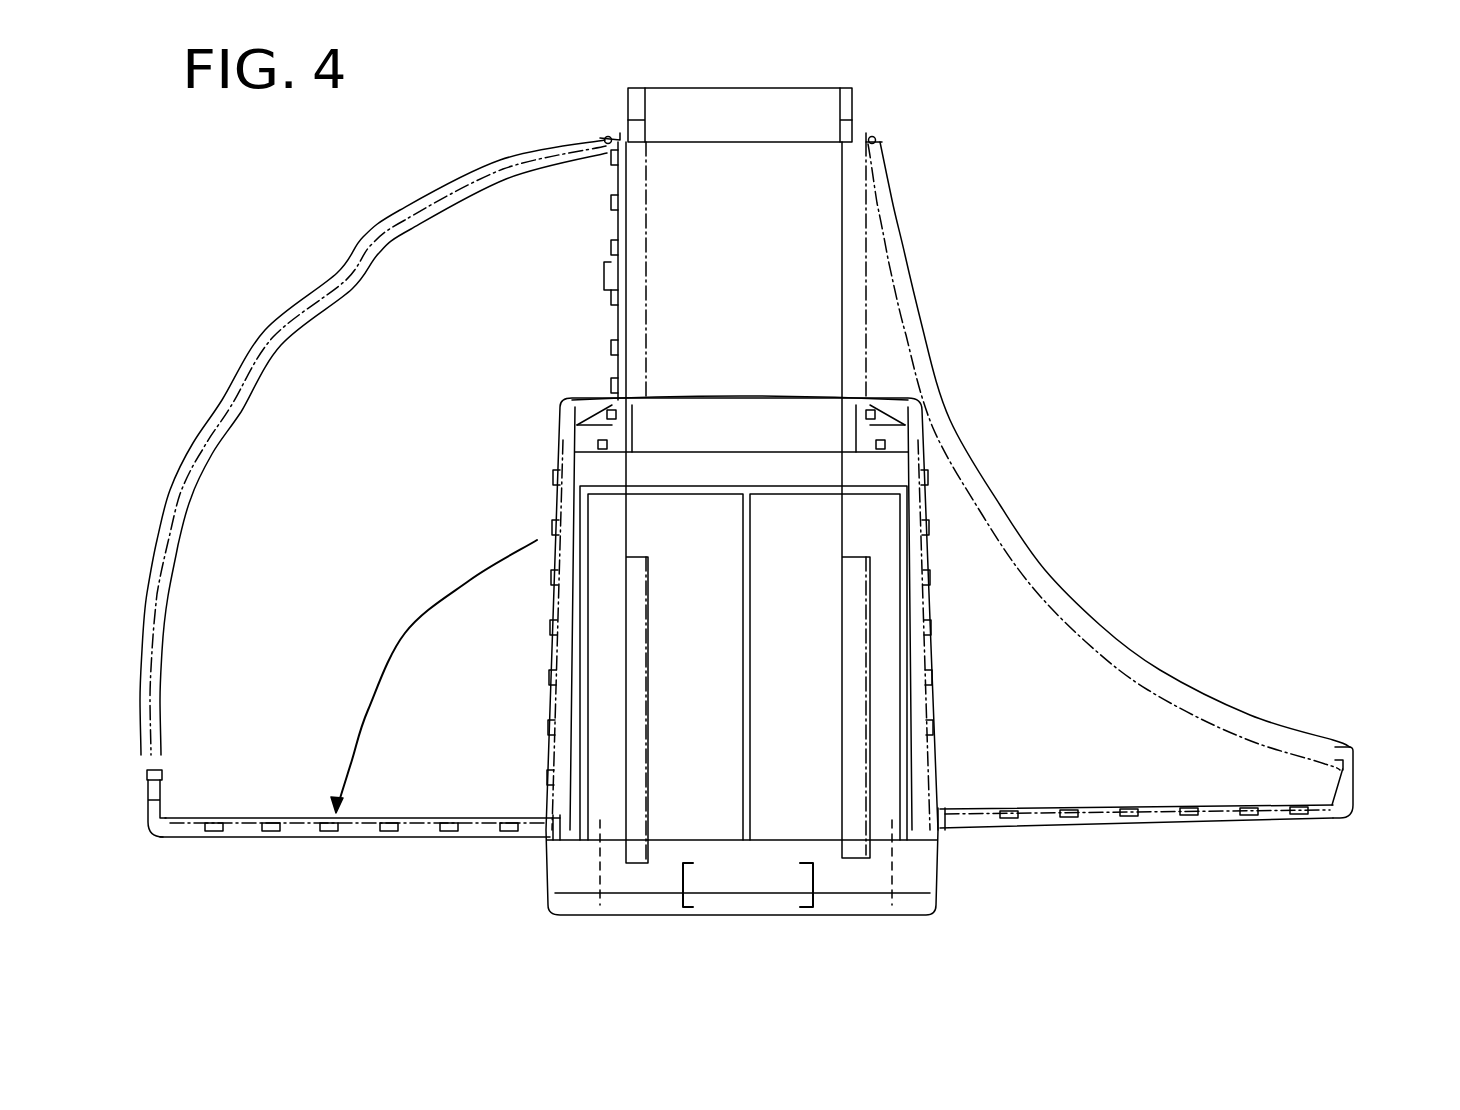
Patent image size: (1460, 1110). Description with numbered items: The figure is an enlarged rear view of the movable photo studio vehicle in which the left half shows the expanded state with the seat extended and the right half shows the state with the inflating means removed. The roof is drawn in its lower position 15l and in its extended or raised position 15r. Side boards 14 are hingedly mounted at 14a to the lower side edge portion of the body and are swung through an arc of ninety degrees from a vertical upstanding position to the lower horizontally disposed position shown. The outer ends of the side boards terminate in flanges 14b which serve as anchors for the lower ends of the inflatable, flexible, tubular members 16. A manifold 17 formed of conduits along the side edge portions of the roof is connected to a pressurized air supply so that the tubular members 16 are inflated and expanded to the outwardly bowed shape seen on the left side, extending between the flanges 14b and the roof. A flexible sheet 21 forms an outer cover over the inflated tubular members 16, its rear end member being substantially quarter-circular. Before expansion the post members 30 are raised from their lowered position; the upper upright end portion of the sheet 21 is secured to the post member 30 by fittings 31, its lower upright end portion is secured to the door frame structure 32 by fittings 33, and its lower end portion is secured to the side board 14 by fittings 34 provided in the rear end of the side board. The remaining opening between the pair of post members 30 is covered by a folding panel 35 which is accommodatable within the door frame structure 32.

The side board 14 is at (365, 818).
The hinge mounting of side board 14a is at (553, 818).
The flange 14b is at (163, 813).
The raised position of roof 15r is at (722, 94).
The lower position of roof 15l is at (717, 407).
The inflatable flexible tubular member 16 is at (357, 268).
The manifold 17 is at (615, 136).
The flexible sheet 21 is at (447, 178).
The post member 30 is at (616, 190).
The fitting 31 is at (612, 268).
The door frame structure 32 is at (598, 474).
The fitting 33 is at (548, 575).
The fitting 34 is at (345, 840).
The folding panel 35 is at (780, 230).